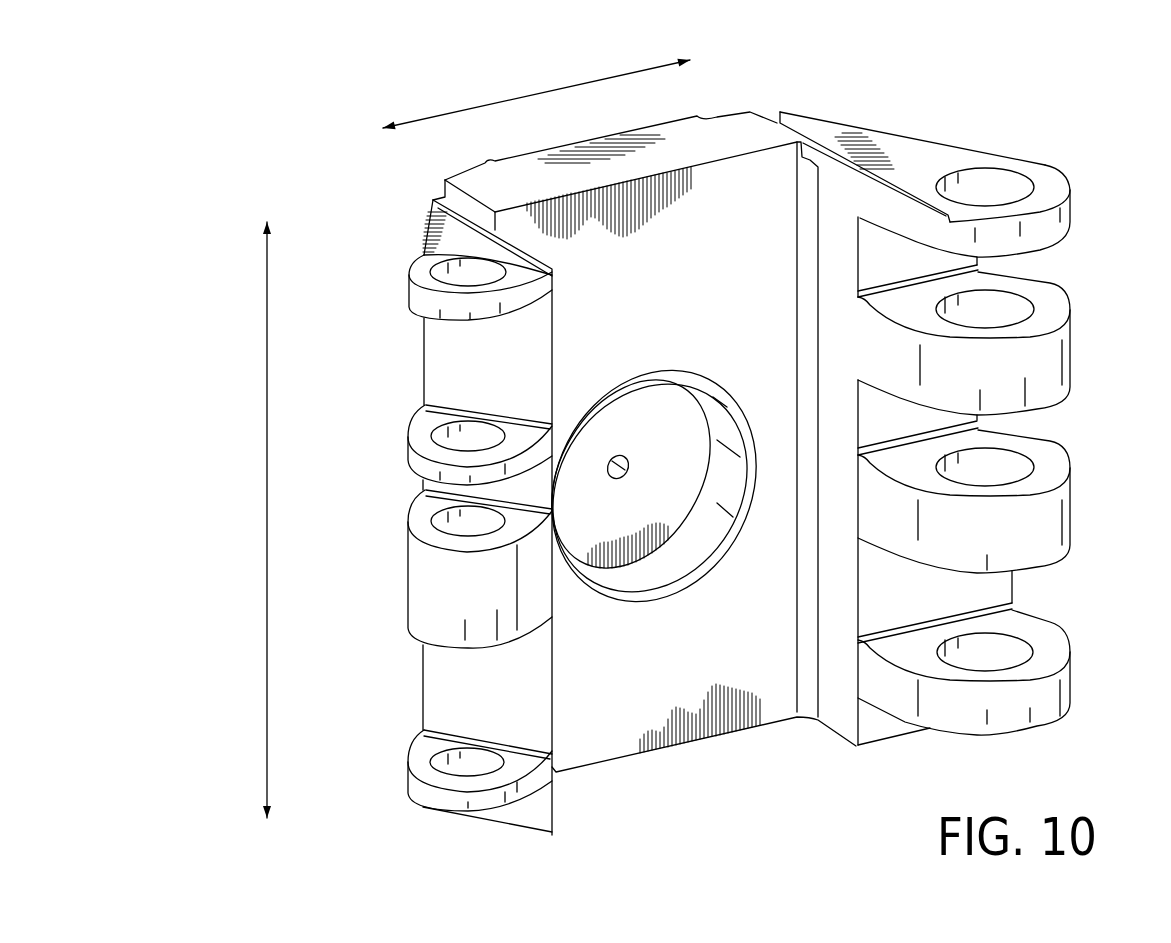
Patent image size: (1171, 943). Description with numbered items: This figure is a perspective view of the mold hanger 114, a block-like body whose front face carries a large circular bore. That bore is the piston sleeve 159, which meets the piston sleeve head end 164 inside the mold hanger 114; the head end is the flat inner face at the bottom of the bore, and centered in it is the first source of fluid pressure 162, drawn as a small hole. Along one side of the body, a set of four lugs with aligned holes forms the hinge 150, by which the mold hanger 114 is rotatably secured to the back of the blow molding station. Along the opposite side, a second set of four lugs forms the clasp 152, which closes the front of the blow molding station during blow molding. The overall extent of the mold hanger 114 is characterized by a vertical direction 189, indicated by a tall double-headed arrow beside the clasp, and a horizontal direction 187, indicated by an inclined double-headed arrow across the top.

The mold hanger 114 is at (337, 125).
The hinge 150 is at (1097, 165).
The clasp 152 is at (387, 197).
The piston sleeve 159 is at (663, 563).
The first source of fluid pressure 162 is at (623, 453).
The piston sleeve head end 164 is at (642, 503).
The horizontal direction 187 is at (513, 100).
The vertical direction 189 is at (265, 512).